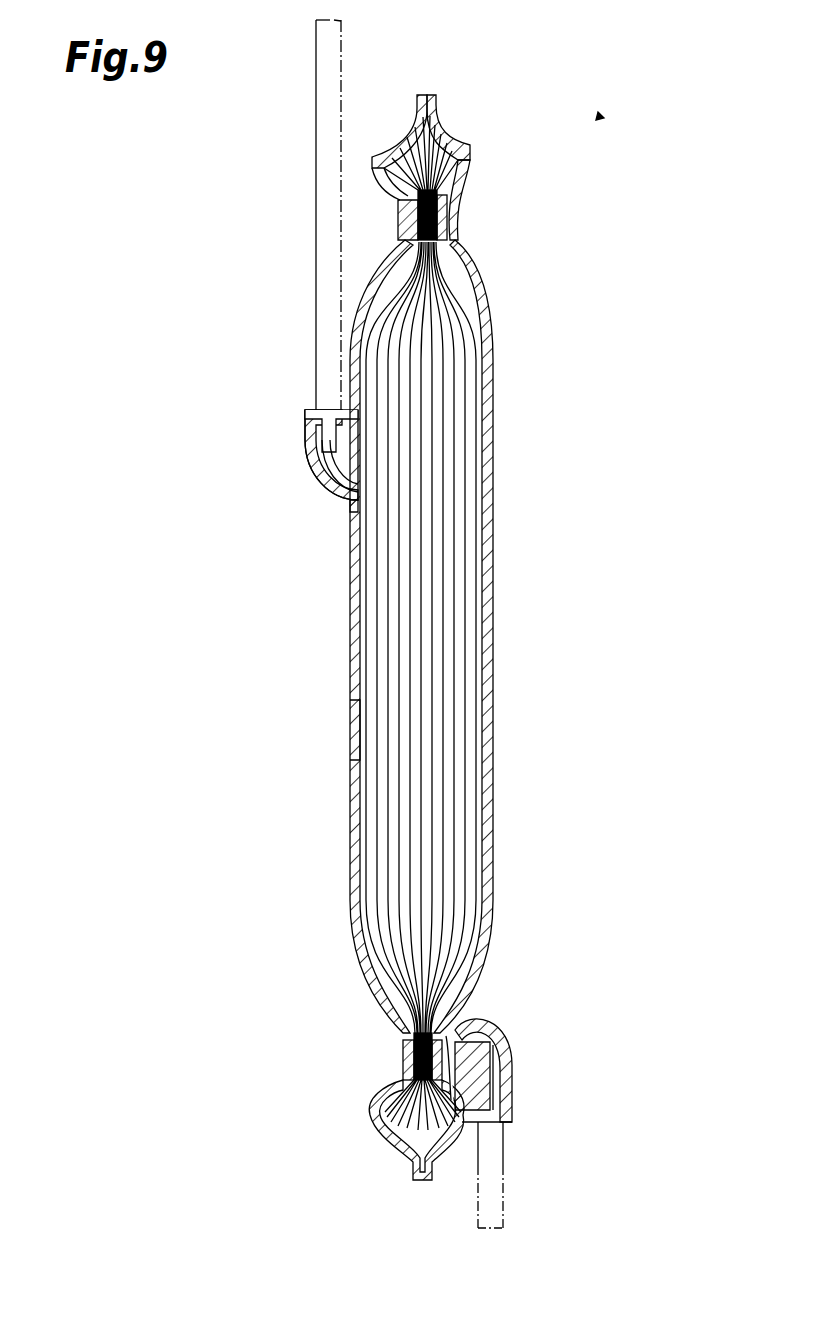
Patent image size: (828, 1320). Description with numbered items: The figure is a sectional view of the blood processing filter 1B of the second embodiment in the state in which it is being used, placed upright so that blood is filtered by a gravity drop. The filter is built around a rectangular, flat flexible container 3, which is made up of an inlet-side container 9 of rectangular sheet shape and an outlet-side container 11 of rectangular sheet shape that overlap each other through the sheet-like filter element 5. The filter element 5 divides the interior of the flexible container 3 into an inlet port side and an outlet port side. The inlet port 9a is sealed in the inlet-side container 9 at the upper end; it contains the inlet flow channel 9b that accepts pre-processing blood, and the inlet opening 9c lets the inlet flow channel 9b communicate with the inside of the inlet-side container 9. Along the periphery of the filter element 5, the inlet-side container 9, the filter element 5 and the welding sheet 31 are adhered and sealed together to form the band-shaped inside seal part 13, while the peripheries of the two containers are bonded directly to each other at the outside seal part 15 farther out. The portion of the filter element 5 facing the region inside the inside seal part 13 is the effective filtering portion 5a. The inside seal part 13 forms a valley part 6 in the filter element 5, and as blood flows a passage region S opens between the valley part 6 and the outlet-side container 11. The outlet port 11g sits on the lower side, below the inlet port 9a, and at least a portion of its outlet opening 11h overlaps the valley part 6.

The blood processing filter 1B is at (597, 119).
The flexible container 3 is at (434, 123).
The filter element 5 is at (388, 636).
The effective filtering portion 5a is at (354, 722).
The valley part 6 is at (445, 214).
The inlet-side container 9 is at (320, 296).
The inlet port 9a is at (306, 455).
The inlet flow channel 9b is at (320, 478).
The inlet opening 9c is at (356, 505).
The outlet-side container 11 is at (477, 140).
The outlet port 11g is at (512, 1076).
The outlet opening 11h is at (450, 1062).
The inside seal part 13 is at (400, 205).
The outside seal part 15 is at (411, 1172).
The welding sheet 31 is at (448, 1032).
The passage region S is at (452, 1058).